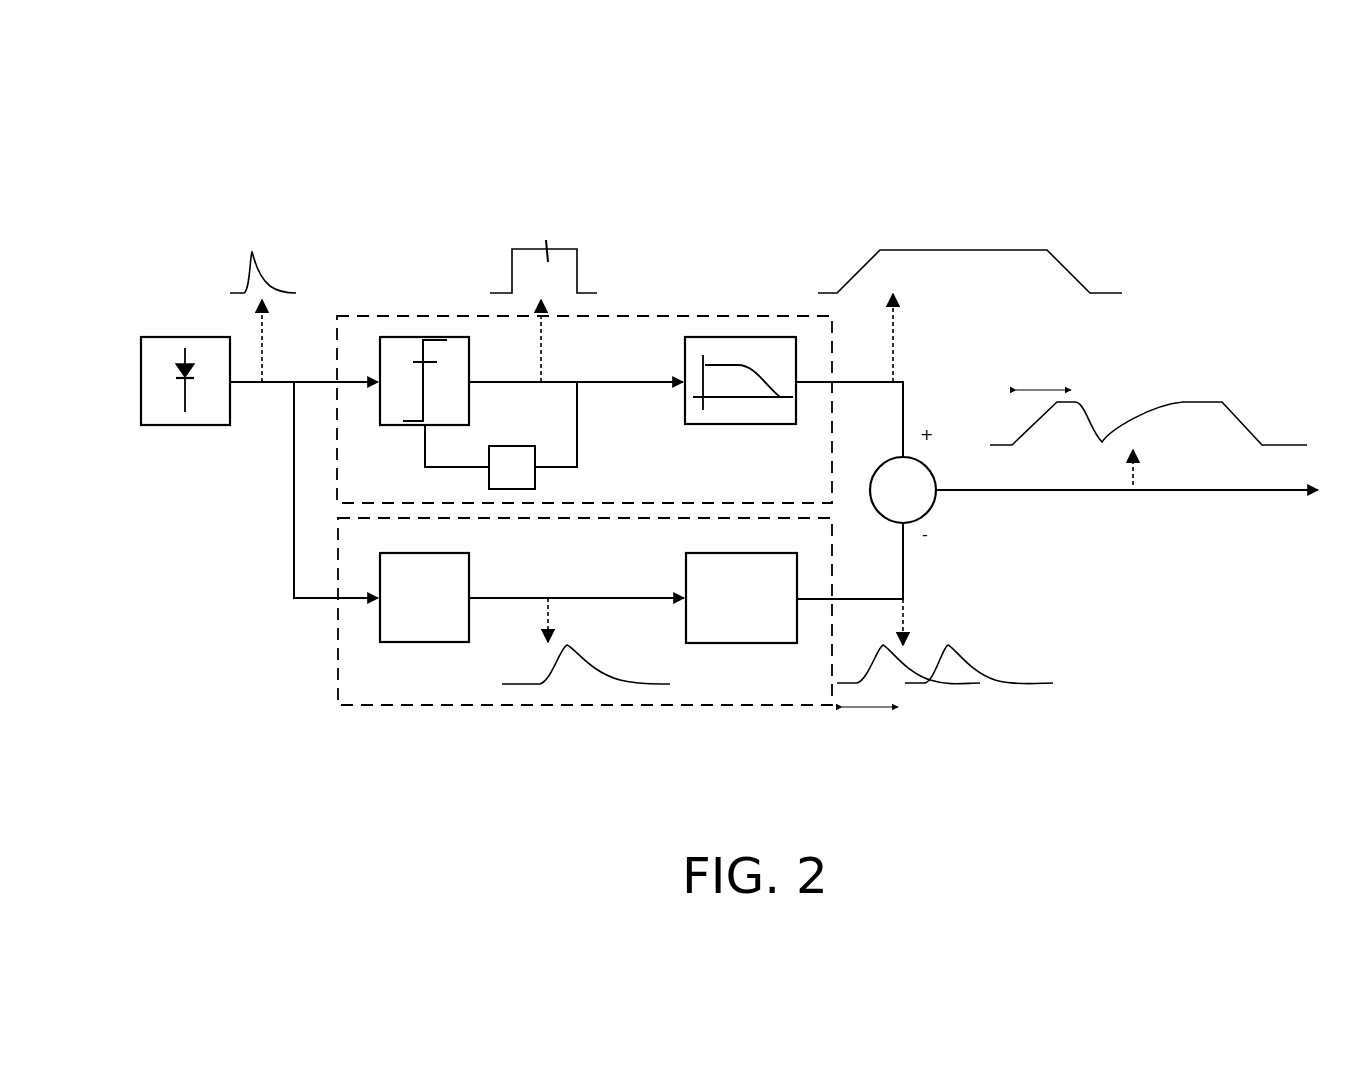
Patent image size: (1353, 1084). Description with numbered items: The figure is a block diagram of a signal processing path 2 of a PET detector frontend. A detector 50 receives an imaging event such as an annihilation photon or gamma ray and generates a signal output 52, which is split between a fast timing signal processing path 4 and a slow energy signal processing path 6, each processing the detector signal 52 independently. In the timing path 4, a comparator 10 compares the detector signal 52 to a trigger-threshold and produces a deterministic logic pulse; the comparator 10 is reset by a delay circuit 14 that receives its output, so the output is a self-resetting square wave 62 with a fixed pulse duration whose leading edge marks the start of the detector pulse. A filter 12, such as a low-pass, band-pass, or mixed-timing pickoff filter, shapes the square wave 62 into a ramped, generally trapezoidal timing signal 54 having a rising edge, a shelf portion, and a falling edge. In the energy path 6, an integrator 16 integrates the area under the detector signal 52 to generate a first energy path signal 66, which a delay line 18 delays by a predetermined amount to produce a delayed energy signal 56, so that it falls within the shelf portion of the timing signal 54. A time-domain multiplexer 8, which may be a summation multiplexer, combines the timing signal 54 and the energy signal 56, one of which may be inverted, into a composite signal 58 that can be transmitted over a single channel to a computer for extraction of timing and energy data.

The signal processing path 2 is at (238, 168).
The timing signal processing path 4 is at (455, 316).
The energy signal processing path 6 is at (390, 708).
The time-domain multiplexer 8 is at (879, 470).
The comparator 10 is at (395, 340).
The filter 12 is at (700, 340).
The delay circuit 14 is at (535, 476).
The integrator 16 is at (380, 576).
The delay line 18 is at (686, 585).
The detector 50 is at (151, 338).
The detector signal output 52 is at (252, 258).
The timing signal 54 is at (947, 250).
The energy signal 56 is at (1027, 683).
The composite signal 58 is at (1192, 402).
The square wave 62 is at (512, 249).
The first energy path signal 66 is at (517, 684).